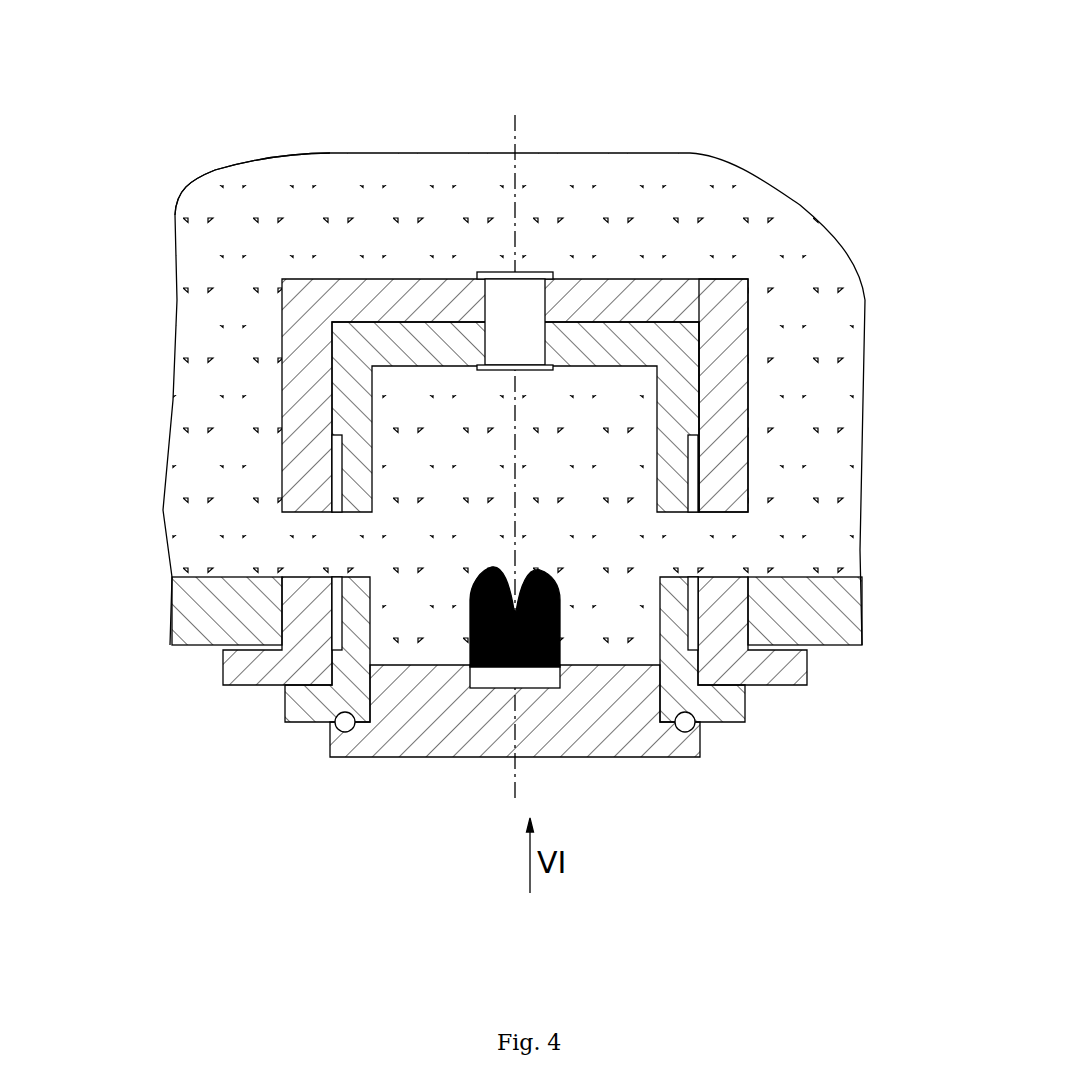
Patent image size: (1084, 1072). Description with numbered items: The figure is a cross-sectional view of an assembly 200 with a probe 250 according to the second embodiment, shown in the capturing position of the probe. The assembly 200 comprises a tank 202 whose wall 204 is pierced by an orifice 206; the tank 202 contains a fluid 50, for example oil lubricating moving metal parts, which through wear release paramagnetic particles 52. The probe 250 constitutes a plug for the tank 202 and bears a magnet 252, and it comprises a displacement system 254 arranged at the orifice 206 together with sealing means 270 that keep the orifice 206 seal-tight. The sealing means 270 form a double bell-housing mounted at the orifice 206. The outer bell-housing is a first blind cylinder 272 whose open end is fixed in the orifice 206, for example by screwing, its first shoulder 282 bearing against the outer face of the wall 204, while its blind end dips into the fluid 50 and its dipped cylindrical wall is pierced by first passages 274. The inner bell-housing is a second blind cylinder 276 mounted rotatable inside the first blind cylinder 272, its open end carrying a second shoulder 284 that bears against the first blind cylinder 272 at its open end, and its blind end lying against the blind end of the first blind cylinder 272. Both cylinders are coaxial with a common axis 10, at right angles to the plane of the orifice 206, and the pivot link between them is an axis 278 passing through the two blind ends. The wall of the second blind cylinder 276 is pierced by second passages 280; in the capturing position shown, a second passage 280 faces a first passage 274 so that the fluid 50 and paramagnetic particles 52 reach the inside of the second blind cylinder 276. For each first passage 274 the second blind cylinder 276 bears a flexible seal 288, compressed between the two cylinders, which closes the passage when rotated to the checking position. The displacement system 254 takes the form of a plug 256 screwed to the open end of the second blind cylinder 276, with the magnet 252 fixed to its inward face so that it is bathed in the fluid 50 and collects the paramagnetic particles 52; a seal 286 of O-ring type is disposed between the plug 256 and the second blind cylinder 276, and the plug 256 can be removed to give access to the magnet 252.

The axis 10 is at (515, 127).
The fluid 50 is at (280, 183).
The paramagnetic particles 52 is at (220, 187).
The assembly 200 is at (766, 88).
The tank 202 is at (823, 171).
The wall 204 is at (167, 627).
The orifice 206 is at (282, 603).
The probe 250 is at (790, 778).
The magnet 252 is at (487, 680).
The displacement system 254 is at (765, 828).
The plug 256 is at (597, 743).
The sealing means 270 is at (209, 730).
The first blind cylinder 272 is at (283, 333).
The first passages 274 is at (303, 508).
The second blind cylinder 276 is at (676, 340).
The axis 278 is at (530, 323).
The second passages 280 is at (670, 512).
The first shoulder 282 is at (793, 675).
The second shoulder 284 is at (287, 718).
The seal 286 is at (348, 732).
The seal 288 is at (693, 460).